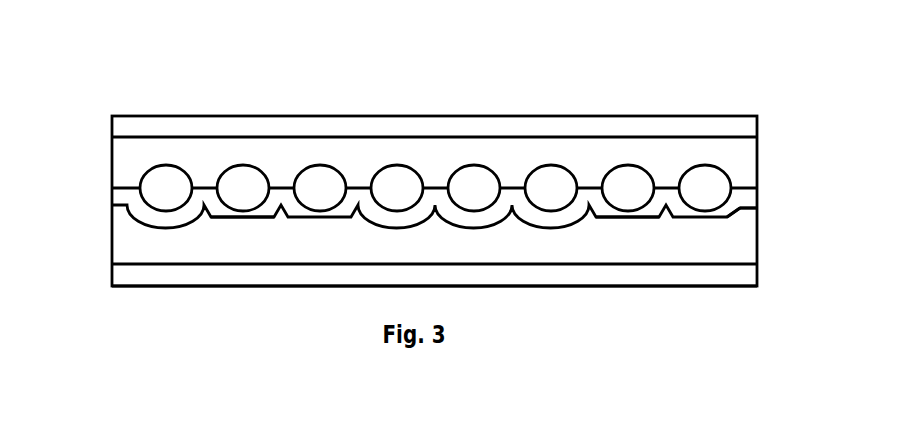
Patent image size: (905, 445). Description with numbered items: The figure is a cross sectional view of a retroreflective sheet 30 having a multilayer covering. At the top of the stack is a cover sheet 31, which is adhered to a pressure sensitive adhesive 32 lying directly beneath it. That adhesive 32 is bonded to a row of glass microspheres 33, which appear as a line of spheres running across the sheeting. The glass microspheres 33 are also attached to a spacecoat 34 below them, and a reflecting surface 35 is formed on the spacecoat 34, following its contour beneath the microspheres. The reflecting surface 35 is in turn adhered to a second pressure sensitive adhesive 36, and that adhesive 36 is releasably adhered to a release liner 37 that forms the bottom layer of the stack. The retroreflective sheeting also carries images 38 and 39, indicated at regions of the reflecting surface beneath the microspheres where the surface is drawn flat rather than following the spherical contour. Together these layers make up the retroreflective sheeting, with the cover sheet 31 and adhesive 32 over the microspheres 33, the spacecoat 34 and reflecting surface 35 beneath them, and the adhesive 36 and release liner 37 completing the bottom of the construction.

The retroreflective sheet 30 is at (441, 150).
The cover sheet 31 is at (742, 127).
The pressure sensitive adhesive 32 is at (737, 157).
The glass microspheres 33 is at (708, 188).
The spacecoat 34 is at (740, 198).
The reflecting surface 35 is at (127, 215).
The pressure sensitive adhesive 36 is at (157, 243).
The release liner 37 is at (143, 277).
The image 38 is at (242, 218).
The image 39 is at (615, 223).